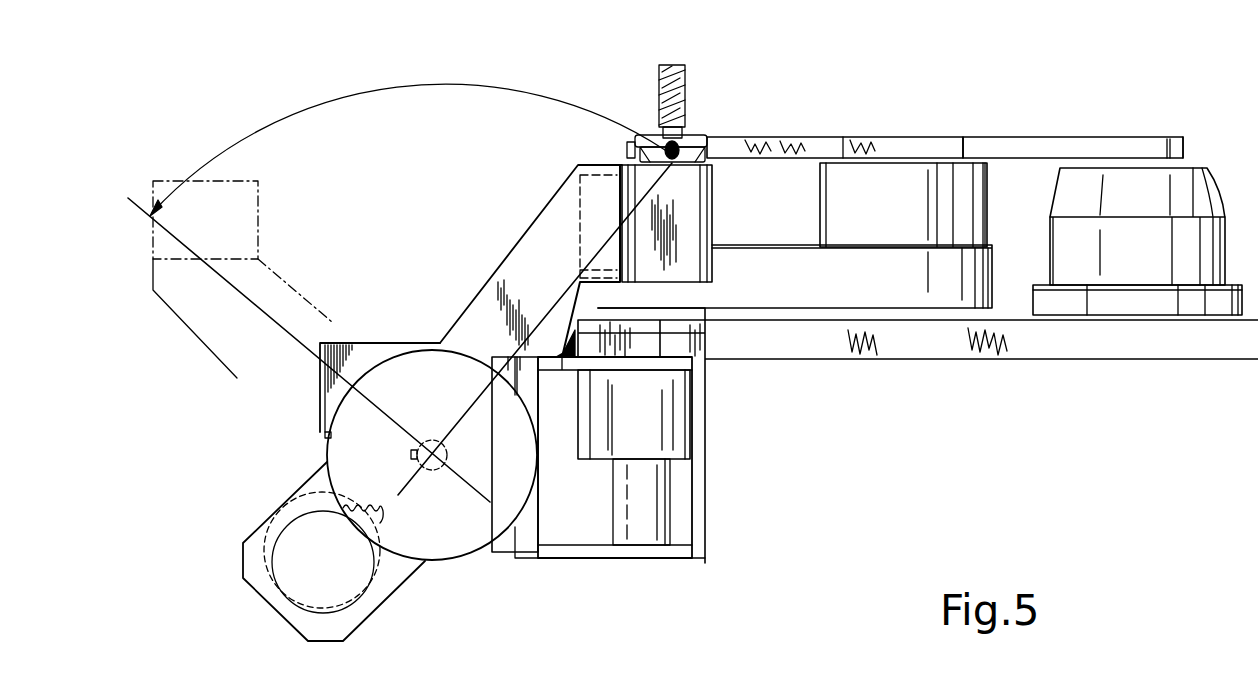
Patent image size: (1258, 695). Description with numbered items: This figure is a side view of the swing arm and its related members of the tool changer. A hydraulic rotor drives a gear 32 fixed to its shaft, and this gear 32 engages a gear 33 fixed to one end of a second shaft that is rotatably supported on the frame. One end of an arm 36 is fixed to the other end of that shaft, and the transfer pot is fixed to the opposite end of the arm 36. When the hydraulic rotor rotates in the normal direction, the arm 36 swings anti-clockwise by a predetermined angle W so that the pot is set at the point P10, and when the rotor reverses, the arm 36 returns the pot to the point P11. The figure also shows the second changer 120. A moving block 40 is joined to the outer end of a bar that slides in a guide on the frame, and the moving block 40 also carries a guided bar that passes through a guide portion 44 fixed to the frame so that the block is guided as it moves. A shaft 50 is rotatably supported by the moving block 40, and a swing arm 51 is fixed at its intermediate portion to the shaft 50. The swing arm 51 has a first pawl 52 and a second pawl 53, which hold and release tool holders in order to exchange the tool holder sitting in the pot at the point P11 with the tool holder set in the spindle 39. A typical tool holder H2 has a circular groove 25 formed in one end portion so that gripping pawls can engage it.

The point P10 is at (147, 190).
The point P11 is at (716, 262).
The predetermined angle W is at (407, 137).
The gear 33 is at (470, 541).
The gear 32 is at (370, 583).
The arm 36 is at (502, 278).
The tool holder H2 is at (693, 135).
The first pawl 52 is at (640, 135).
The circular groove 25 is at (705, 138).
The shaft 50 is at (888, 158).
The swing arm 51 is at (1003, 146).
The second pawl 53 is at (1177, 140).
The second changer 120 is at (912, 127).
The moving block 40 is at (818, 302).
The guide portion 44 is at (693, 436).
The spindle 39 is at (1212, 181).